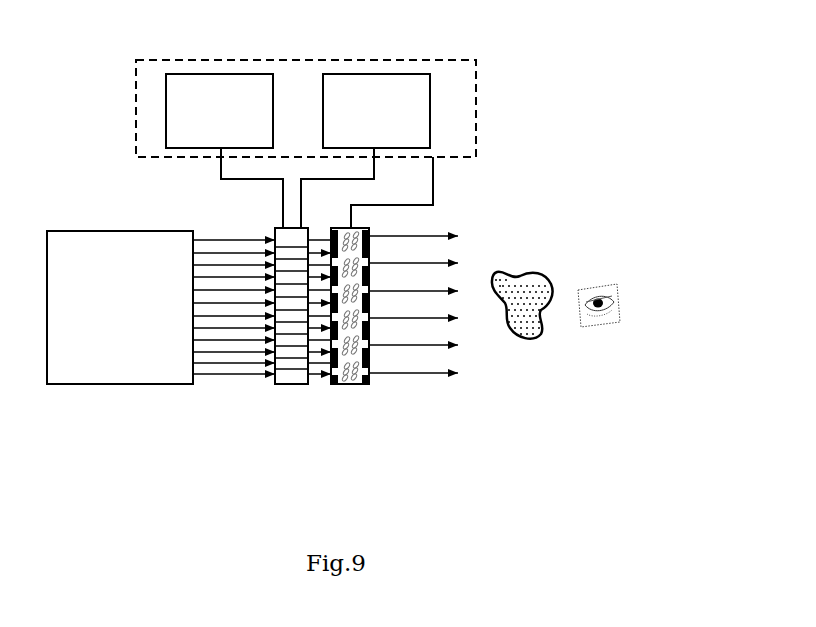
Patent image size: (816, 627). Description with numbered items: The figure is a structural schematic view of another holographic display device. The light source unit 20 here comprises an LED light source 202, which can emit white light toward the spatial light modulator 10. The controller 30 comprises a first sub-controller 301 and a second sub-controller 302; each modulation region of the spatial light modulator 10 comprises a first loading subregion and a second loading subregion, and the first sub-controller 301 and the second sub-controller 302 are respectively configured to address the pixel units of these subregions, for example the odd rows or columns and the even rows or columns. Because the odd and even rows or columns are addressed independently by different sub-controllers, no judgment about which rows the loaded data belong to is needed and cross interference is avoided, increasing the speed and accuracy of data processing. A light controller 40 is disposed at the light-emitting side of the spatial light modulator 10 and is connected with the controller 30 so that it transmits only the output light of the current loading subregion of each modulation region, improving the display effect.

The controller 30 is at (460, 103).
The first sub-controller 301 is at (218, 85).
The second sub-controller 302 is at (372, 83).
The LED light source 202 is at (119, 363).
The light source unit 20 is at (120, 356).
The spatial light modulator 10 is at (296, 372).
The light controller 40 is at (347, 377).